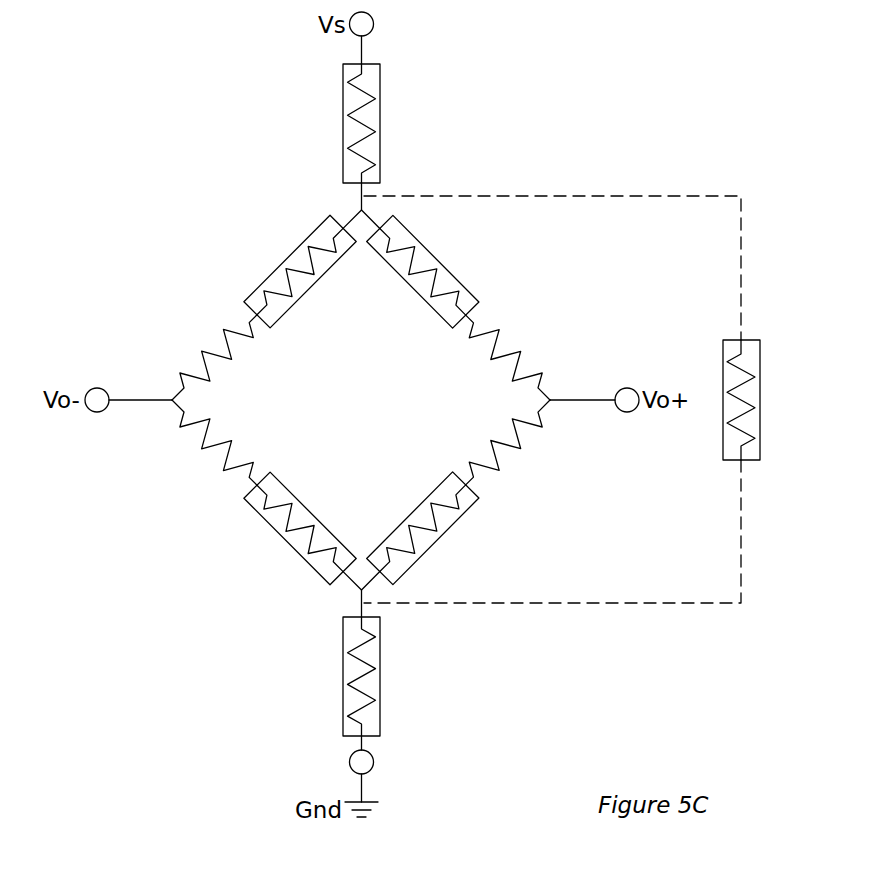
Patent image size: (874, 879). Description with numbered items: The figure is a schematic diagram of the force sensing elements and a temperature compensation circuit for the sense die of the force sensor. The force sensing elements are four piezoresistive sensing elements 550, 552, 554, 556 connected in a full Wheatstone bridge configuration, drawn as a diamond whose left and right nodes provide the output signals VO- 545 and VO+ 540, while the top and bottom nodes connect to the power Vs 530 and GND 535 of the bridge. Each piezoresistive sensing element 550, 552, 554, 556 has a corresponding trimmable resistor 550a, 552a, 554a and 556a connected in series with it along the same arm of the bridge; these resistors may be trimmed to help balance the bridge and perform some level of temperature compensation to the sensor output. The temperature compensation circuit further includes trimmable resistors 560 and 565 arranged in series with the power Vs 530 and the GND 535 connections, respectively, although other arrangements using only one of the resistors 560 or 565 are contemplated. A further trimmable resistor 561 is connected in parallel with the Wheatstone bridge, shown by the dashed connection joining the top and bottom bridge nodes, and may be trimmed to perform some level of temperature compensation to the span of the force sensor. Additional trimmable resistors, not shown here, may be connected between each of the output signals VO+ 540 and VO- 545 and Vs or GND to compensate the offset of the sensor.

The power Vs 530 is at (374, 22).
The trimmable resistor 560 is at (380, 123).
The trimmable resistor 565 is at (380, 675).
The trimmable resistor 561 is at (760, 399).
The GND 535 is at (373, 759).
The output signal VO- 545 is at (96, 388).
The output signal VO+ 540 is at (628, 388).
The piezoresistive sensing element 550 is at (202, 350).
The piezoresistive sensing element 552 is at (520, 352).
The piezoresistive sensing element 554 is at (523, 448).
The piezoresistive sensing element 556 is at (202, 447).
The trimmable resistor 550a is at (285, 257).
The trimmable resistor 552a is at (438, 258).
The trimmable resistor 554a is at (435, 542).
The trimmable resistor 556a is at (288, 542).